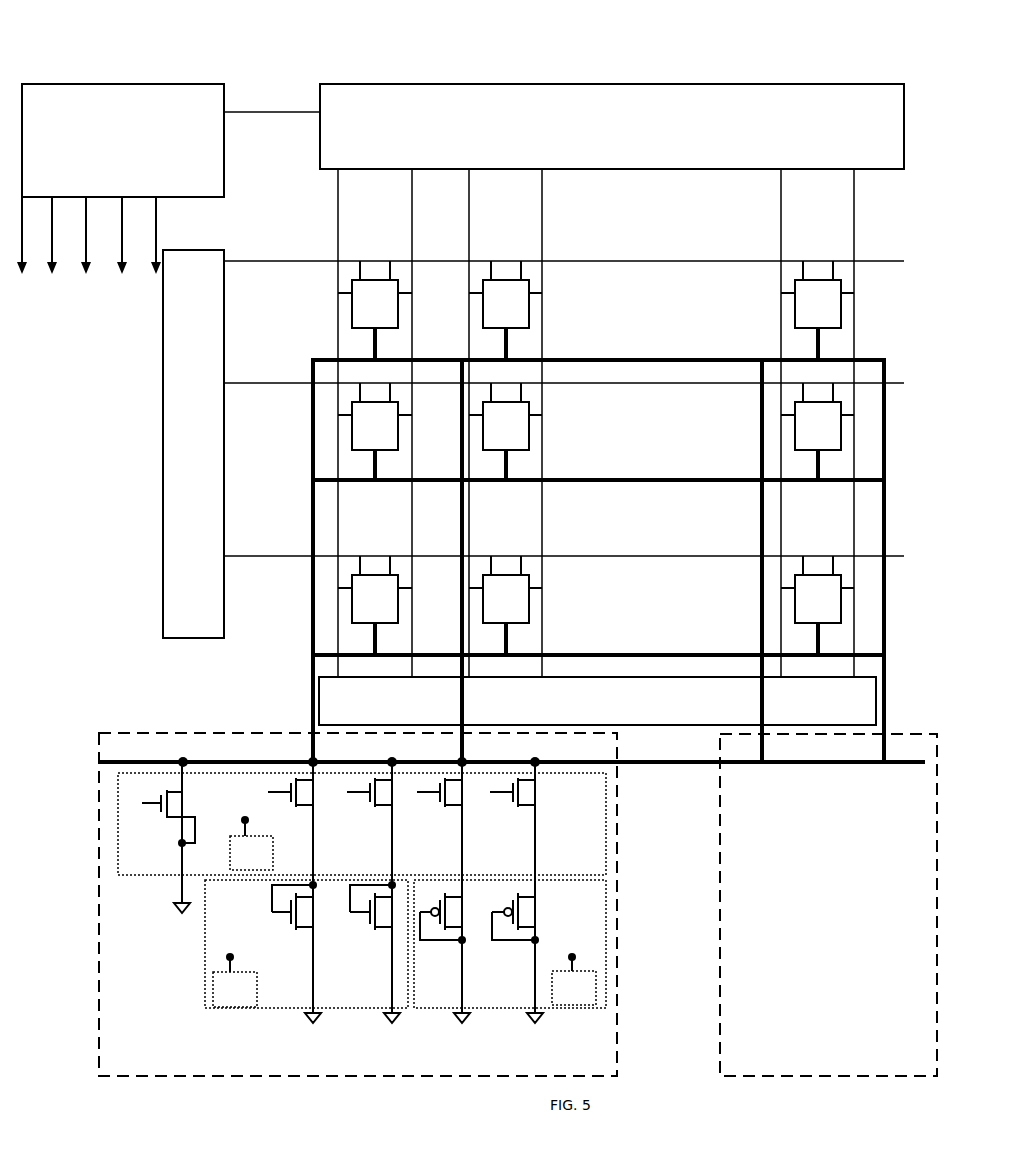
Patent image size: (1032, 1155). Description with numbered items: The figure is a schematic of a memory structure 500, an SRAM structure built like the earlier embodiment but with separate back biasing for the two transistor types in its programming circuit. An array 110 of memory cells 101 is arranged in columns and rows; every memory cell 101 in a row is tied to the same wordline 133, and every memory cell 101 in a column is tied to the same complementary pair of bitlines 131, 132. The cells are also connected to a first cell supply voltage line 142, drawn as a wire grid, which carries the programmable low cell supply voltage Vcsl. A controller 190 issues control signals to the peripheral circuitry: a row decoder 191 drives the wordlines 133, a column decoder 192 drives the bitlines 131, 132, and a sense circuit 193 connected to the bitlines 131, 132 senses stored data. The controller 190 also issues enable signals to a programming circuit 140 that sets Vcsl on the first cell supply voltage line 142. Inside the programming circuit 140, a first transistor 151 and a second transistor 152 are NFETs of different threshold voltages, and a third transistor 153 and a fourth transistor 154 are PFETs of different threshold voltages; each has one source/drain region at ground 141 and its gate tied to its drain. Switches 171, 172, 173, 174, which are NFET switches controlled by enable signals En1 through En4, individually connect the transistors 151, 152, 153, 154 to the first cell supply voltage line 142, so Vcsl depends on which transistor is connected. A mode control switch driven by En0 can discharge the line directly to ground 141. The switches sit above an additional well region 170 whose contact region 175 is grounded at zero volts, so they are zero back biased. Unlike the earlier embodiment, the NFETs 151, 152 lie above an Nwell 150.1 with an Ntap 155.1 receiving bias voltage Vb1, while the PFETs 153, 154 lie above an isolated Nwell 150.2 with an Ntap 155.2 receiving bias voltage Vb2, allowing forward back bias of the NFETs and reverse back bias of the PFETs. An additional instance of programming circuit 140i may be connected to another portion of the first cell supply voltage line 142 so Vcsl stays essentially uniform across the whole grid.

The memory structure 500 is at (828, 54).
The array 110 is at (877, 224).
The memory cell 101 is at (596, 458).
The bitline 131 is at (337, 200).
The bitline 132 is at (411, 206).
The wordline 133 is at (252, 259).
The programming circuit 140 is at (381, 904).
The additional instance of programming circuit 140i is at (828, 905).
The ground 141 is at (181, 917).
The first cell supply voltage line 142 is at (644, 359).
The Nwell 150.1 is at (306, 944).
The Nwell 150.2 is at (510, 944).
The first transistor 151 is at (306, 928).
The second transistor 152 is at (384, 928).
The third transistor 153 is at (446, 952).
The fourth transistor 154 is at (521, 948).
The Ntap 155.1 is at (233, 972).
The Ntap 155.2 is at (574, 971).
The additional well region 170 is at (362, 832).
The switch 171 is at (306, 812).
The switch 172 is at (384, 812).
The switch 173 is at (453, 812).
The switch 174 is at (526, 812).
The contact region 175 is at (251, 834).
The controller 190 is at (168, 179).
The row decoder 191 is at (193, 444).
The column decoder 192 is at (612, 126).
The sense circuit 193 is at (597, 701).